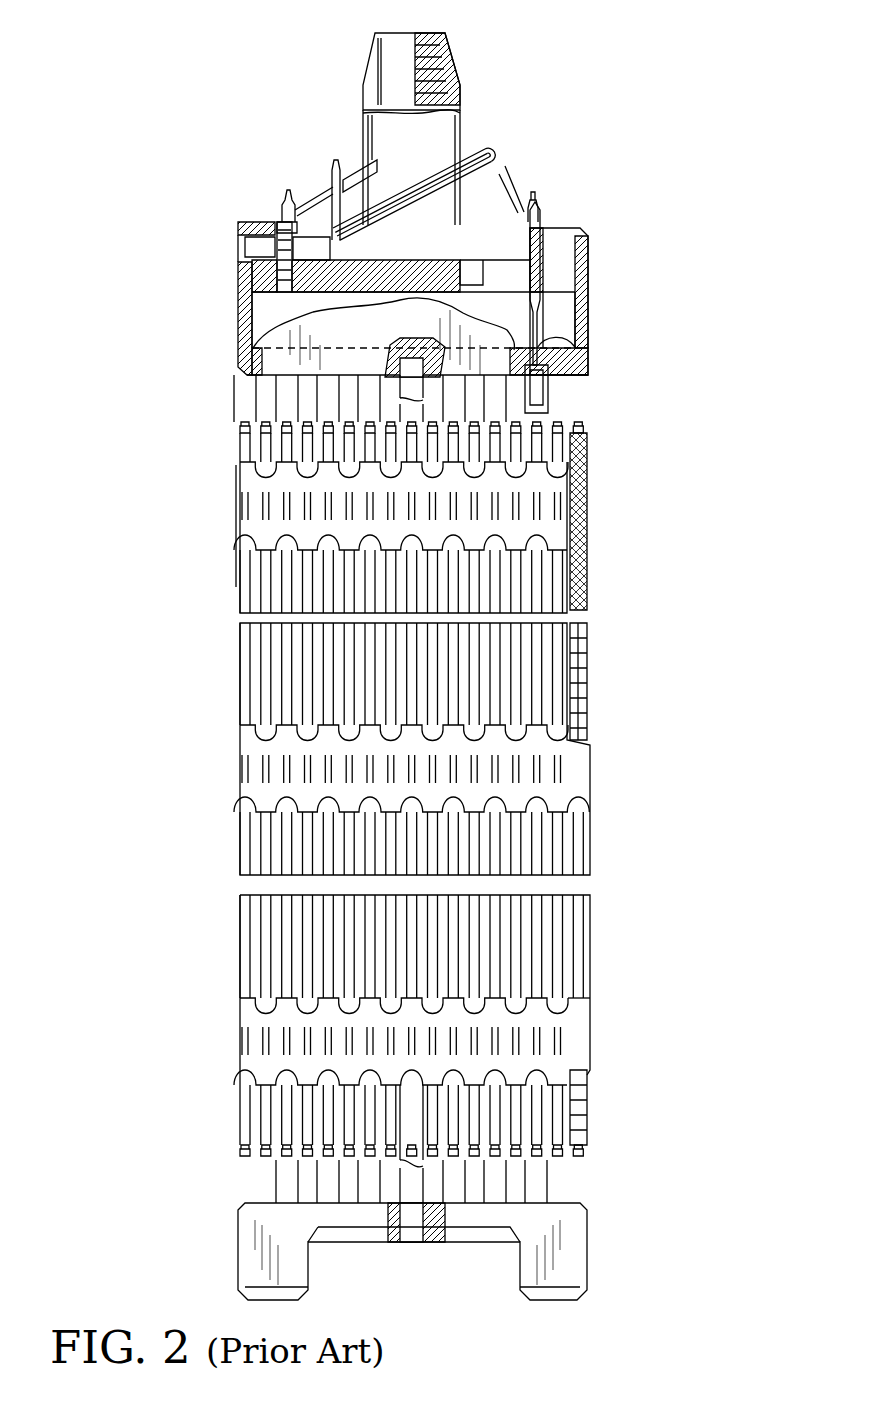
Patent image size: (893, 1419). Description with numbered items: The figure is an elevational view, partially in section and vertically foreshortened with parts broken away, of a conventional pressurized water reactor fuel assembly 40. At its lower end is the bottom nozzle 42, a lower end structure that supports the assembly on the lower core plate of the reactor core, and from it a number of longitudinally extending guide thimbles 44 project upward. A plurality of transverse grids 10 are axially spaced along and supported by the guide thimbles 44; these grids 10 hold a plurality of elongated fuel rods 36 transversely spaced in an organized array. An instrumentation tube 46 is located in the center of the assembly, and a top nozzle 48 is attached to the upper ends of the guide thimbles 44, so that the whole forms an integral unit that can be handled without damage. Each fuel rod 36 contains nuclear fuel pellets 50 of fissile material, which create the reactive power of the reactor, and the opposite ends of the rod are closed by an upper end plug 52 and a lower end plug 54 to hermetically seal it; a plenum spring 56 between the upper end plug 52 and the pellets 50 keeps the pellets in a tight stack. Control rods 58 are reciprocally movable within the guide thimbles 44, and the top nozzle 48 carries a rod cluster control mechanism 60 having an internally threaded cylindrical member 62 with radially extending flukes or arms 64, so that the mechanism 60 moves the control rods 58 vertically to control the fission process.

The transverse grid 10 is at (234, 514).
The fuel rod 36 is at (234, 586).
The fuel assembly 40 is at (687, 195).
The bottom nozzle 42 is at (588, 1270).
The guide thimble 44 is at (272, 402).
The instrumentation tube 46 is at (417, 1229).
The top nozzle 48 is at (588, 290).
The nuclear fuel pellets 50 is at (588, 655).
The upper end plug 52 is at (240, 432).
The lower end plug 54 is at (240, 1152).
The plenum spring 56 is at (588, 507).
The control rod 58 is at (548, 333).
The rod cluster control mechanism 60 is at (463, 128).
The internally threaded cylindrical member 62 is at (363, 133).
The flukes or arms 64 is at (307, 197).